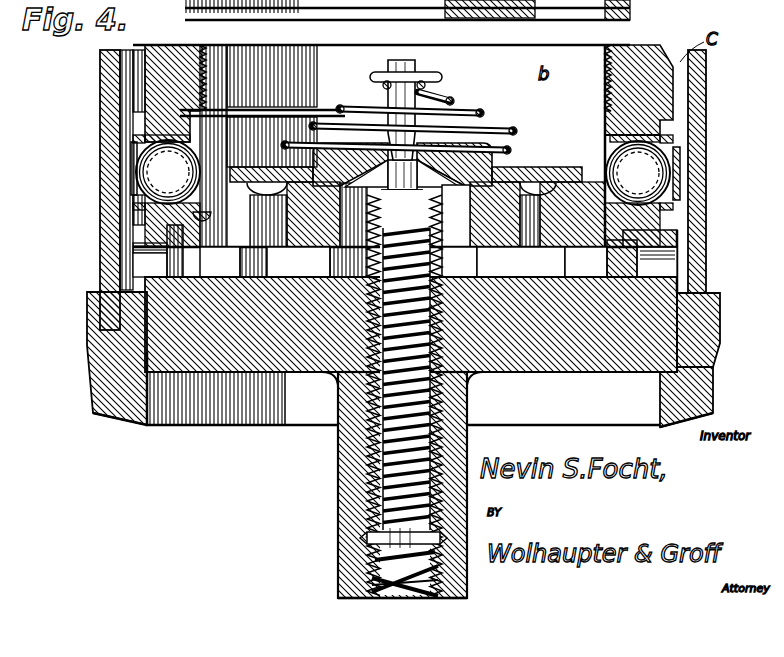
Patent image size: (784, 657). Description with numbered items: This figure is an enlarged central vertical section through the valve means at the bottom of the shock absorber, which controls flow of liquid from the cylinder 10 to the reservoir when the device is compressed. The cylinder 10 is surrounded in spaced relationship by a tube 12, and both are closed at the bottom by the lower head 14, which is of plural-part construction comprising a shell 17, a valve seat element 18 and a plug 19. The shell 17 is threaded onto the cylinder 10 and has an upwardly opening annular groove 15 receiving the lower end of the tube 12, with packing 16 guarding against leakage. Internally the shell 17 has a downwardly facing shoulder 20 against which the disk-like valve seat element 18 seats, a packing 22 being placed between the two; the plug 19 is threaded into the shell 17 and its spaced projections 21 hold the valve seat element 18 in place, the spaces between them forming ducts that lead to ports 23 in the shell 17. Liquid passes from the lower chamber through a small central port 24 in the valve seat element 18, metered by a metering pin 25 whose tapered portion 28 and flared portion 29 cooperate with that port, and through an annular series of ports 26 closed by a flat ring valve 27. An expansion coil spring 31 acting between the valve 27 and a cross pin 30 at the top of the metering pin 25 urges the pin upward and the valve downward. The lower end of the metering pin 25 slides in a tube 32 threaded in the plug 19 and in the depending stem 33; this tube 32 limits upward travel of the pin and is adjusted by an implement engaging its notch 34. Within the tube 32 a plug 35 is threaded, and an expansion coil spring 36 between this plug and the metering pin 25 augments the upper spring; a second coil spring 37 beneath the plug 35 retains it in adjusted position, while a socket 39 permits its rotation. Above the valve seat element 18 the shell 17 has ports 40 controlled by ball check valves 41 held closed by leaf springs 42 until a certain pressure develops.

The cylinder 10 is at (100, 172).
The tube 12 is at (700, 83).
The lower head 14 is at (728, 393).
The annular groove 15 is at (720, 312).
The packing 16 is at (720, 330).
The shell 17 is at (145, 92).
The valve seat element 18 is at (580, 200).
The plug 19 is at (580, 360).
The shoulder 20 is at (680, 235).
The projections 21 is at (560, 262).
The packing 22 is at (613, 223).
The ports 23 is at (145, 268).
The central port 24 is at (385, 140).
The metering pin 25 is at (388, 64).
The ports 26 is at (243, 245).
The valve 27 is at (545, 168).
The tapered portion 28 is at (402, 185).
The flared portion 29 is at (490, 133).
The cross pin 30 is at (442, 77).
The expansion coil spring 31 is at (455, 108).
The tube 32 is at (375, 383).
The stem 33 is at (345, 500).
The notch 34 is at (367, 538).
The plug 35 is at (383, 450).
The expansion coil spring 36 is at (440, 385).
The coil spring 37 is at (372, 576).
The socket 39 is at (445, 545).
The ports 40 is at (403, 172).
The ball check valves 41 is at (133, 140).
The leaf springs 42 is at (130, 190).